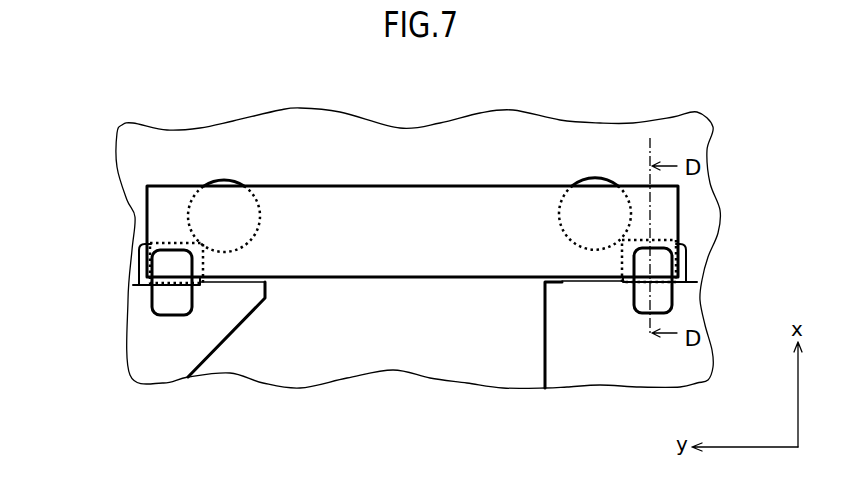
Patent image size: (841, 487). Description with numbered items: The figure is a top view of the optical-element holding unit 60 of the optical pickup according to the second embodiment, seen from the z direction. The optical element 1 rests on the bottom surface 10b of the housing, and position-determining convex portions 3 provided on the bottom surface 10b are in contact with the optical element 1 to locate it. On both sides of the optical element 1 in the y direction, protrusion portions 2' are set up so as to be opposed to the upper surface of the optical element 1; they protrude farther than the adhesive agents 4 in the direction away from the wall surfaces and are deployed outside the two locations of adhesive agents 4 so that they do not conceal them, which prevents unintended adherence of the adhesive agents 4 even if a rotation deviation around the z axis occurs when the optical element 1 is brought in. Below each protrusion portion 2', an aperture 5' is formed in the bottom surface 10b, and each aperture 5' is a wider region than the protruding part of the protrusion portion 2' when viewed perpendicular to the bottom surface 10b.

The optical element 1 is at (330, 200).
The protrusion portion 2' is at (422, 198).
The position-determining convex portion 3 is at (213, 178).
The adhesive agent 4 is at (228, 283).
The aperture 5' is at (409, 268).
The bottom surface 10b is at (395, 322).
The optical-element holding unit 60 is at (98, 87).